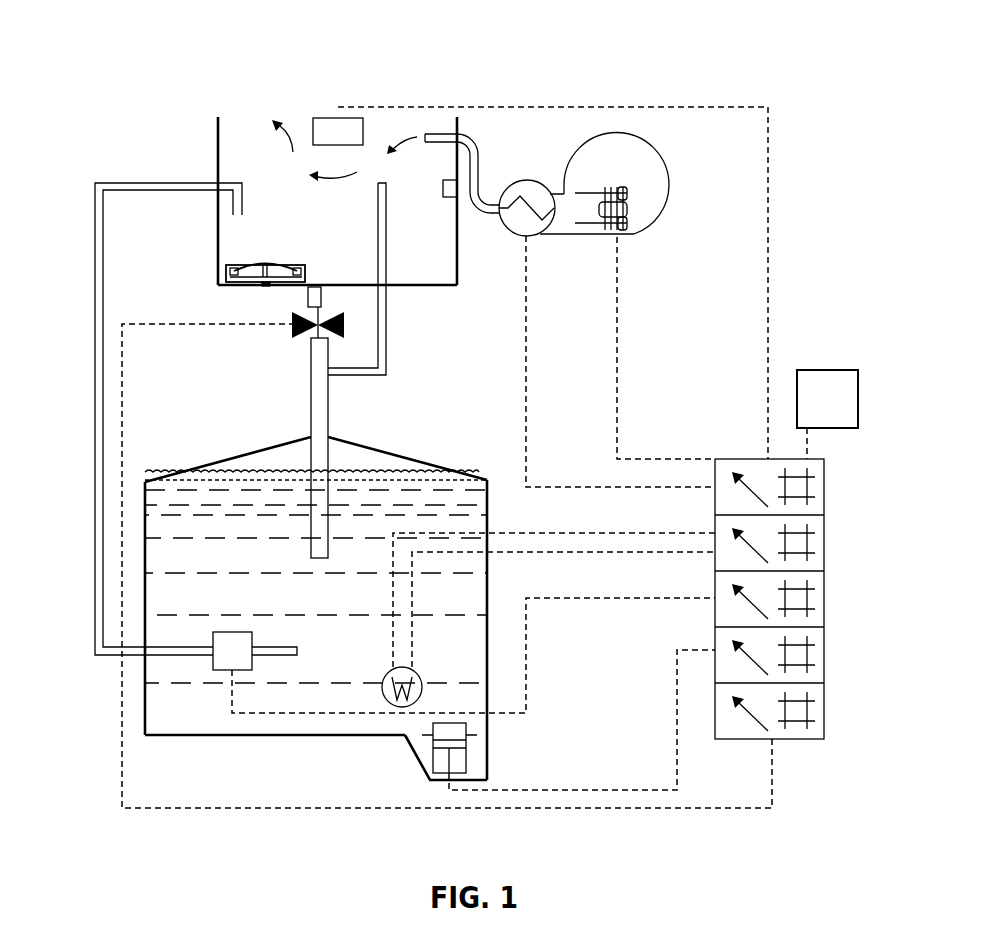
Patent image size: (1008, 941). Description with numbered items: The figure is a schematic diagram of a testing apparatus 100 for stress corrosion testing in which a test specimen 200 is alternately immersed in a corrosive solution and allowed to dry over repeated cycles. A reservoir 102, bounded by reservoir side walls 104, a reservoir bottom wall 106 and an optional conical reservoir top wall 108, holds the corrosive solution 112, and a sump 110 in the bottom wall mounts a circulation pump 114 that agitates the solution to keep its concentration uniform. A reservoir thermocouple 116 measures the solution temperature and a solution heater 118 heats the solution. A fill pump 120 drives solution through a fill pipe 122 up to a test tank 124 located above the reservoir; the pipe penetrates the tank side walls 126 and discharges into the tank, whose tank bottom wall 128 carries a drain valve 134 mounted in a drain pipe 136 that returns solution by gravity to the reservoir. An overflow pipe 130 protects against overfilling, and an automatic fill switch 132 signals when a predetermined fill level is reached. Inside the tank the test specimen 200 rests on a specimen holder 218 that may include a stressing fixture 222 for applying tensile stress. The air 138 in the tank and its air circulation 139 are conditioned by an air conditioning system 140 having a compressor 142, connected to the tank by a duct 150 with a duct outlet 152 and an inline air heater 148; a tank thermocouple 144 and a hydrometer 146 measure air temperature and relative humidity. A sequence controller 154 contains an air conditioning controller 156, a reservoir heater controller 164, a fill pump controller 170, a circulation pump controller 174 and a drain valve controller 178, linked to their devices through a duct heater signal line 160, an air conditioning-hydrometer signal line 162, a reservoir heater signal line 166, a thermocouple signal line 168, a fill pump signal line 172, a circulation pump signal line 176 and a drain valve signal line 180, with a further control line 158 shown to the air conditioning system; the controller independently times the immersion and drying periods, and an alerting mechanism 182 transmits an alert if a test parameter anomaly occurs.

The testing apparatus 100 is at (153, 63).
The reservoir 102 is at (175, 477).
The reservoir side walls 104 is at (145, 712).
The reservoir bottom wall 106 is at (212, 737).
The reservoir top wall 108 is at (240, 453).
The sump 110 is at (417, 757).
The corrosive solution 112 is at (256, 547).
The circulation pump 114 is at (467, 758).
The reservoir thermocouple 116 is at (385, 675).
The solution heater 118 is at (412, 668).
The fill pump 120 is at (230, 630).
The fill pipe 122 is at (94, 552).
The test tank 124 is at (216, 130).
The tank side walls 126 is at (217, 222).
The tank bottom wall 128 is at (420, 288).
The overflow pipe 130 is at (386, 217).
The automatic fill switch 132 is at (459, 197).
The drain valve 134 is at (310, 333).
The drain pipe 136 is at (330, 411).
The air 138 is at (266, 172).
The air circulation 139 is at (292, 136).
The air conditioning system 140 is at (652, 147).
The compressor 142 is at (666, 200).
The tank thermocouple 144 is at (322, 117).
The hydrometer 146 is at (338, 131).
The air heater 148 is at (527, 180).
The duct 150 is at (475, 140).
The duct outlet 152 is at (430, 133).
The sequence controller 154 is at (825, 460).
The air conditioning controller 156 is at (825, 488).
The blower control line 158 is at (620, 325).
The duct heater signal line 160 is at (527, 345).
The air conditioning-hydrometer signal line 162 is at (770, 200).
The reservoir heater controller 164 is at (825, 545).
The reservoir heater signal line 166 is at (532, 553).
The thermocouple signal line 168 is at (547, 533).
The fill pump controller 170 is at (825, 598).
The fill pump signal line 172 is at (528, 627).
The circulation pump controller 174 is at (825, 655).
The circulation pump signal line 176 is at (617, 790).
The drain valve controller 178 is at (825, 710).
The drain valve signal line 180 is at (663, 812).
The alerting mechanism 182 is at (847, 410).
The test specimen 200 is at (243, 262).
The specimen holder 218 is at (227, 272).
The stressing fixture 222 is at (243, 282).